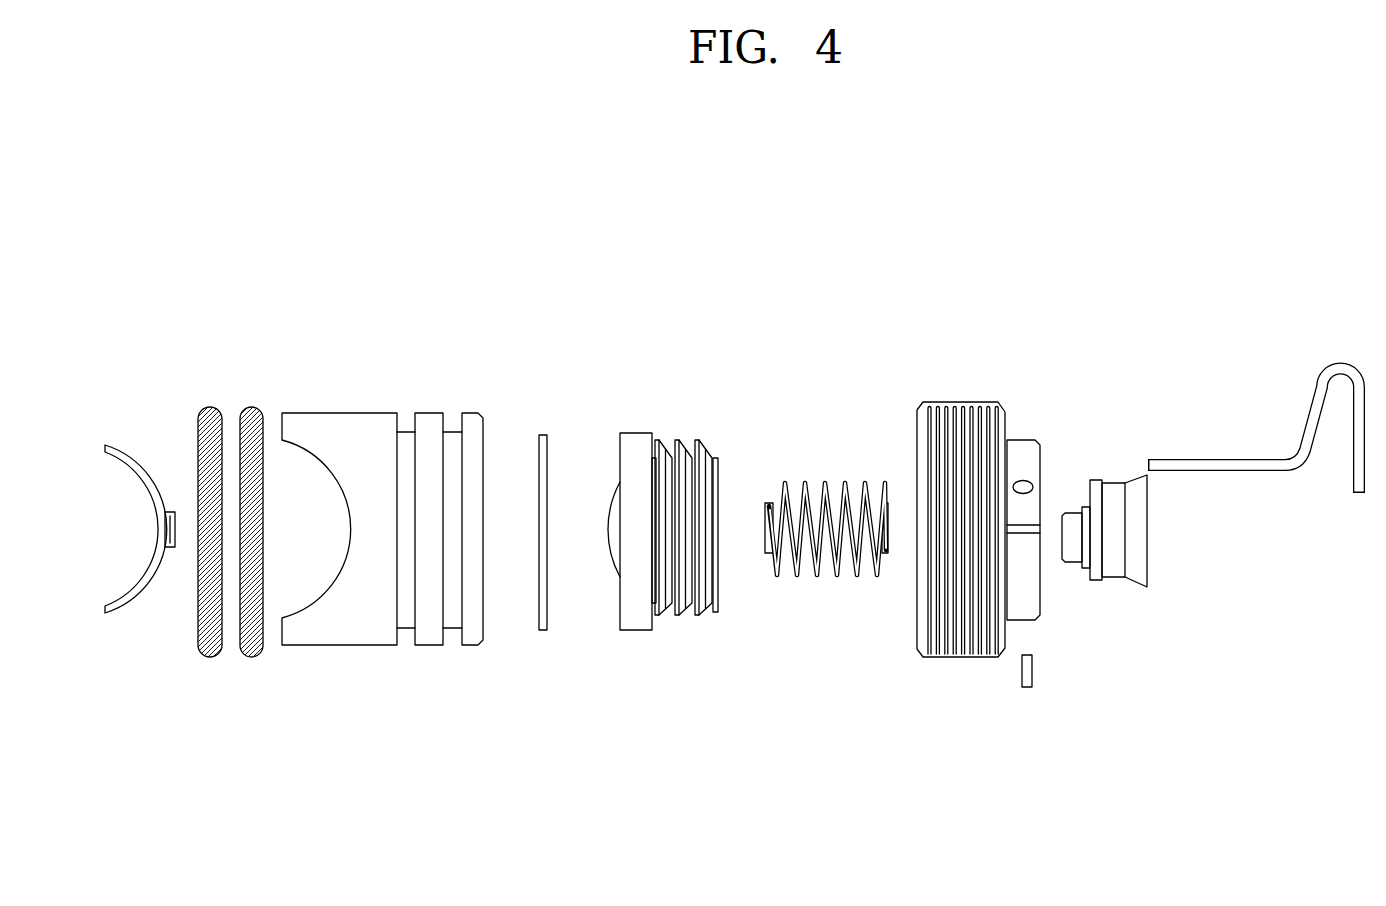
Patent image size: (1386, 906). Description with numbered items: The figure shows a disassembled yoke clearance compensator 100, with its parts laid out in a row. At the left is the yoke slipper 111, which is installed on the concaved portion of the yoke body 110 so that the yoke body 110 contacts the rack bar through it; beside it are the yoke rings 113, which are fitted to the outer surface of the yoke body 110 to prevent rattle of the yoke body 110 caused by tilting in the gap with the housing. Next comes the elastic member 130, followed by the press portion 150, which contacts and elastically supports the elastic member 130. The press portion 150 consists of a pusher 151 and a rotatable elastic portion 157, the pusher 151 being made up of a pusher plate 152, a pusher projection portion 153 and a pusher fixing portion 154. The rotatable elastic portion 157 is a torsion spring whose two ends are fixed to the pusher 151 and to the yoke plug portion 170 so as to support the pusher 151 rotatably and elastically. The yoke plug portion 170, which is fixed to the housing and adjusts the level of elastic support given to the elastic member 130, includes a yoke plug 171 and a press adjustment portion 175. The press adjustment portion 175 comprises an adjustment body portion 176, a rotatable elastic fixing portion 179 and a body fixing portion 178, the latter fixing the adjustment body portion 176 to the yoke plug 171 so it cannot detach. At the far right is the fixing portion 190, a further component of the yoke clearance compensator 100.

The yoke clearance compensator 100 is at (1350, 176).
The yoke body 110 is at (357, 632).
The yoke slipper 111 is at (122, 603).
The yoke ring 113 is at (253, 643).
The elastic member 130 is at (544, 630).
The press portion 150 is at (736, 589).
The pusher 151 is at (668, 582).
The pusher plate 152 is at (642, 615).
The pusher projection portion 153 is at (610, 533).
The pusher fixing portion 154 is at (702, 561).
The rotatable elastic portion 157 is at (826, 581).
The yoke plug portion 170 is at (1054, 613).
The yoke plug 171 is at (968, 638).
The press adjustment portion 175 is at (1106, 629).
The adjustment body portion 176 is at (1108, 562).
The body fixing portion 178 is at (1027, 680).
The rotatable elastic fixing portion 179 is at (1070, 553).
The fixing portion 190 is at (1352, 367).